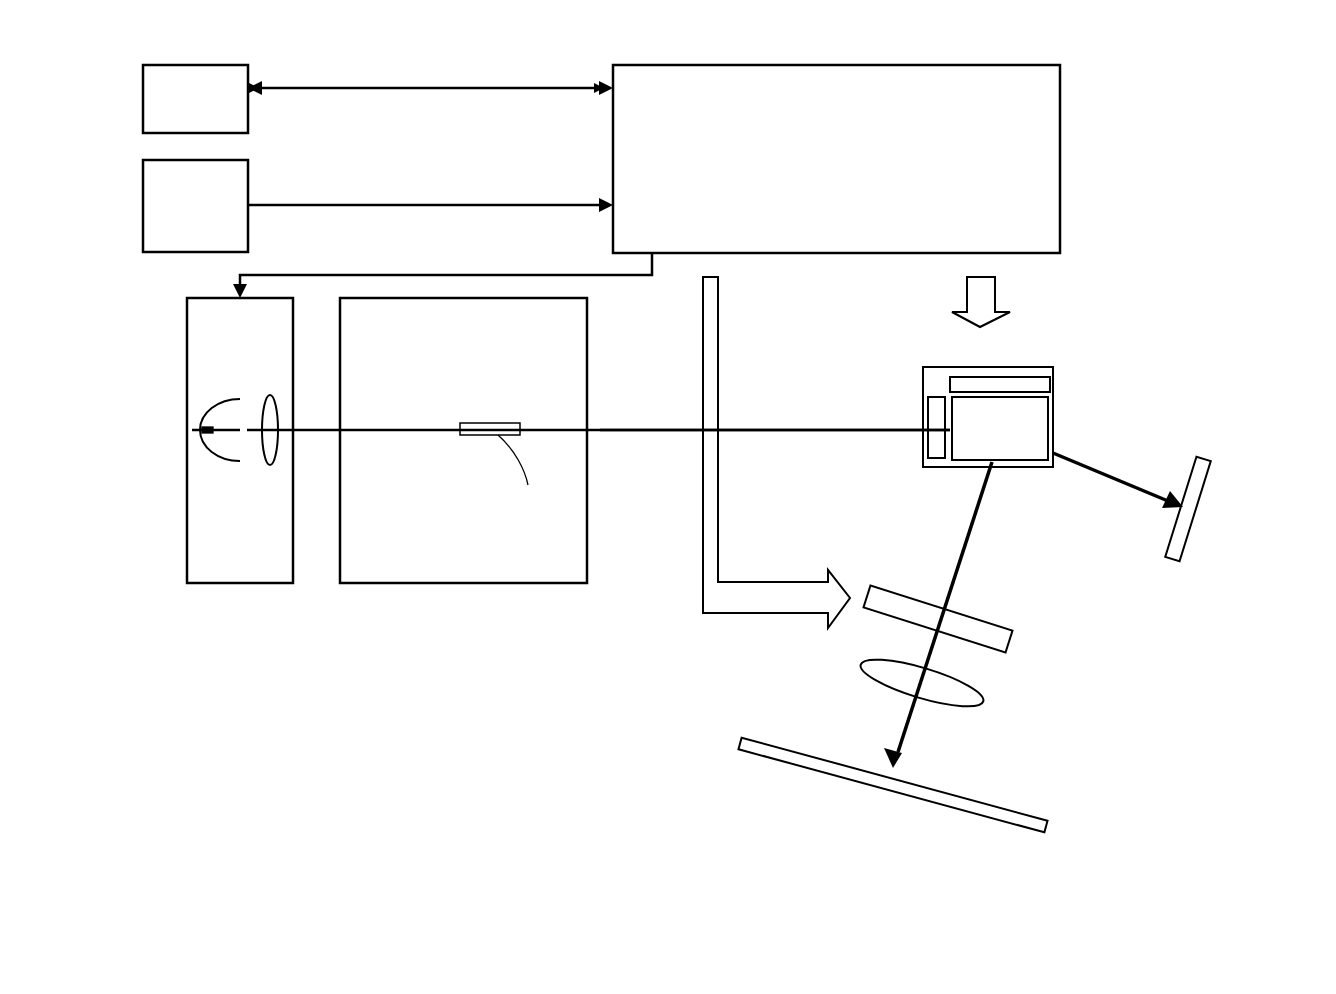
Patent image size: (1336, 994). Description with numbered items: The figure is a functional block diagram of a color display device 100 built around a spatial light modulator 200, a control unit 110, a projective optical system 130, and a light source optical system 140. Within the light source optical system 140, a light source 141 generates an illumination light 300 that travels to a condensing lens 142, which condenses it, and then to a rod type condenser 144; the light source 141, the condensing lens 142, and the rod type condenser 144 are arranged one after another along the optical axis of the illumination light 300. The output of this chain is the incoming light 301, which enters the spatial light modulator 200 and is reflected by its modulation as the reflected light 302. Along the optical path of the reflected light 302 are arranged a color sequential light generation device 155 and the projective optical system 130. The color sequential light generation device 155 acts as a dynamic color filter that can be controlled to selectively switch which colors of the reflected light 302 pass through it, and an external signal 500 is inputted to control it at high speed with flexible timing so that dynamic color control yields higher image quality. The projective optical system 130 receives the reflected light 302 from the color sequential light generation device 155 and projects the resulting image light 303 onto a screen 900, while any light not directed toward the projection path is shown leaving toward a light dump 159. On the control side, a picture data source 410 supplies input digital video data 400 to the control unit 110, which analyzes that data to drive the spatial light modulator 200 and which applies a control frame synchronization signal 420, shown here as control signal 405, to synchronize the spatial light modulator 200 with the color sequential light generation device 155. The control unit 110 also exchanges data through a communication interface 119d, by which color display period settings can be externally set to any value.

The color display device 100 is at (1113, 47).
The control unit 110 is at (837, 65).
The communication interface 119d is at (196, 65).
The picture data source 410 is at (249, 184).
The input digital video data 400 is at (438, 207).
The light source optical system 140 is at (353, 506).
The light source 141 is at (232, 462).
The condensing lens 142 is at (276, 463).
The rod type condenser 144 is at (465, 436).
The illumination light 300 is at (302, 430).
The incoming light 301 is at (790, 430).
The reflected light 302 is at (977, 508).
The image light 303 is at (905, 722).
The external signal 500 is at (712, 597).
The control signal to spatial light modulator 405 is at (1069, 302).
The control frame synchronization signal 420 is at (993, 302).
The spatial light modulator 200 is at (1018, 367).
The color sequential light generation device 155 is at (992, 613).
The projective optical system 130 is at (997, 698).
The screen 900 is at (993, 803).
The light dump 159 is at (1210, 475).